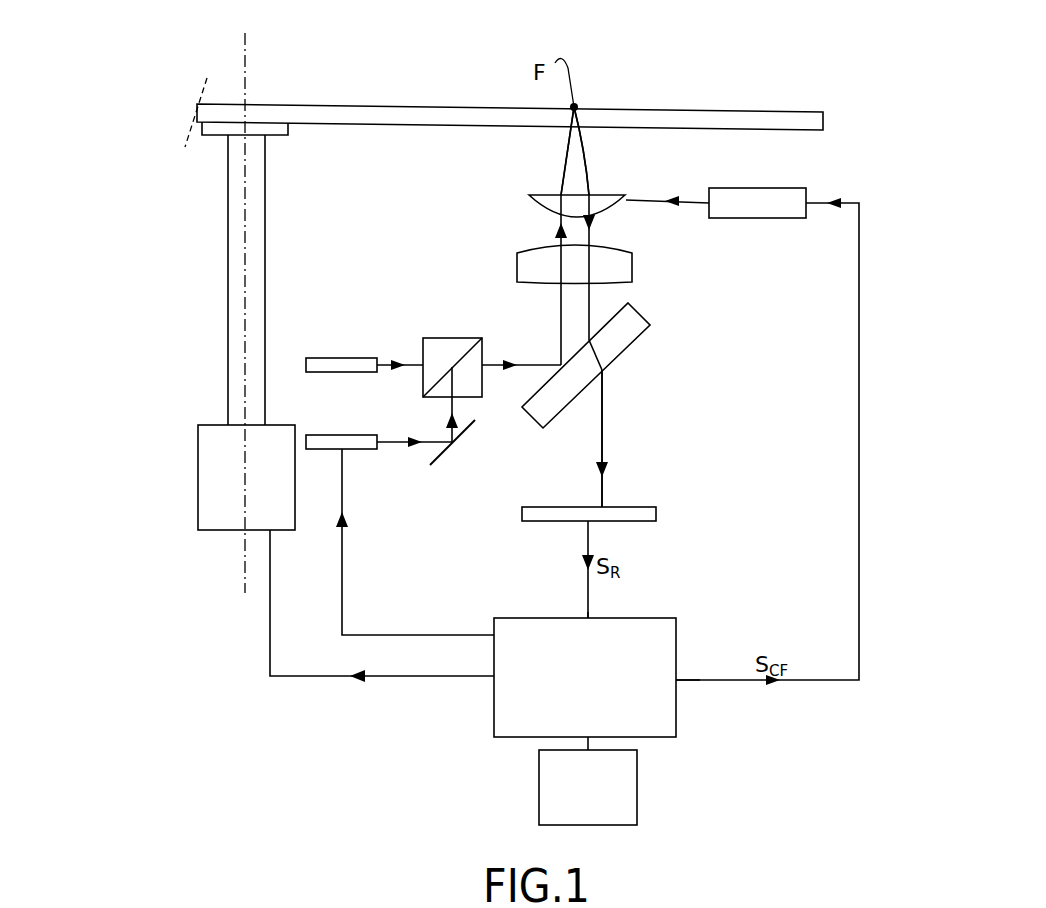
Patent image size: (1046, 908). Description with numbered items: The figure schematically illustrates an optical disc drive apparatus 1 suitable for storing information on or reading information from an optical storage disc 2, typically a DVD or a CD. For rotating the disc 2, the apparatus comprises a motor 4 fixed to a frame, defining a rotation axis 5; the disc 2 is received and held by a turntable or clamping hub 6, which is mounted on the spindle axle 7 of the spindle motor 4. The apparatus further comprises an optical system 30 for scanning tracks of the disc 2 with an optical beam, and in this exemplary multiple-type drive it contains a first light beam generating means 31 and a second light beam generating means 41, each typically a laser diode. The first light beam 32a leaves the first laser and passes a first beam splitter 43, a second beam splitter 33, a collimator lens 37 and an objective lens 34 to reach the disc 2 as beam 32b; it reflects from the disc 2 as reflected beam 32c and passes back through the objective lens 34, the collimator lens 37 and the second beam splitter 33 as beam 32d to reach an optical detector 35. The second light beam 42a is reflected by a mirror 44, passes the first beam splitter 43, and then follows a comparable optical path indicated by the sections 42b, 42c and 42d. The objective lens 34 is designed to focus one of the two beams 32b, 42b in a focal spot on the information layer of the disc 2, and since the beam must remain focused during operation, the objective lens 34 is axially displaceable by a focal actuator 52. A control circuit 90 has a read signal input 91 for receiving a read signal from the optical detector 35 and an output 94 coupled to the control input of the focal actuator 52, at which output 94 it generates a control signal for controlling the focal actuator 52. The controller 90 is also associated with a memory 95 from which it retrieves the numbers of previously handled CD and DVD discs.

The optical disc drive apparatus 1 is at (760, 68).
The optical storage disc 2 is at (426, 105).
The motor 4 is at (246, 477).
The rotation axis 5 is at (245, 563).
The clamping hub 6 is at (213, 136).
The spindle axle 7 is at (228, 240).
The optical system 30 is at (384, 214).
The first light beam generating means 31 is at (330, 357).
The first light beam section 32a is at (388, 360).
The first light beam toward disc 32b is at (539, 236).
The reflected first light beam 32c is at (590, 178).
The first light beam toward detector 32d is at (604, 458).
The second beam splitter 33 is at (638, 343).
The objective lens 34 is at (538, 207).
The optical detector 35 is at (657, 516).
The collimator lens 37 is at (517, 265).
The second light beam generating means 41 is at (352, 435).
The second light beam section 42a is at (410, 440).
The second light beam toward disc 42b is at (562, 178).
The reflected second light beam 42c is at (609, 151).
The second light beam toward detector 42d is at (642, 438).
The first beam splitter 43 is at (456, 338).
The mirror 44 is at (450, 447).
The focal actuator 52 is at (730, 218).
The control circuit 90 is at (597, 674).
The read signal input 91 is at (588, 631).
The output 94 is at (670, 681).
The memory 95 is at (588, 781).